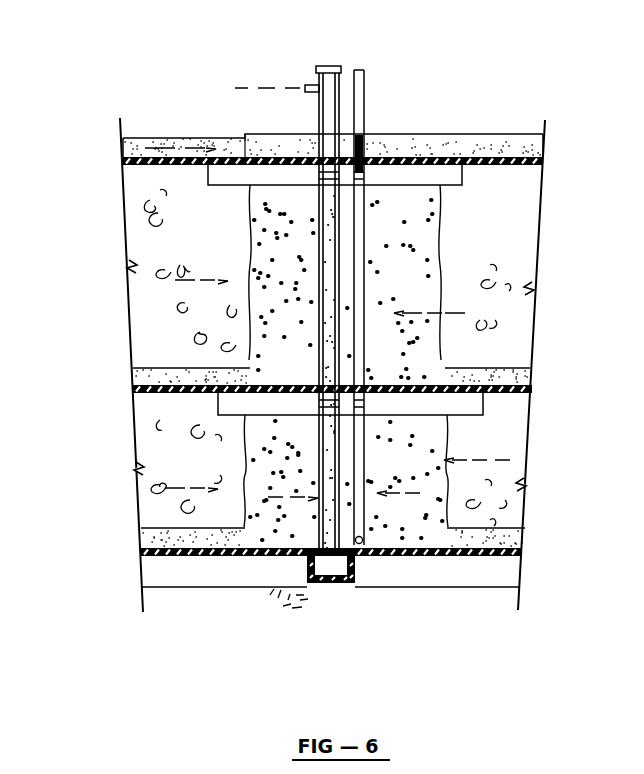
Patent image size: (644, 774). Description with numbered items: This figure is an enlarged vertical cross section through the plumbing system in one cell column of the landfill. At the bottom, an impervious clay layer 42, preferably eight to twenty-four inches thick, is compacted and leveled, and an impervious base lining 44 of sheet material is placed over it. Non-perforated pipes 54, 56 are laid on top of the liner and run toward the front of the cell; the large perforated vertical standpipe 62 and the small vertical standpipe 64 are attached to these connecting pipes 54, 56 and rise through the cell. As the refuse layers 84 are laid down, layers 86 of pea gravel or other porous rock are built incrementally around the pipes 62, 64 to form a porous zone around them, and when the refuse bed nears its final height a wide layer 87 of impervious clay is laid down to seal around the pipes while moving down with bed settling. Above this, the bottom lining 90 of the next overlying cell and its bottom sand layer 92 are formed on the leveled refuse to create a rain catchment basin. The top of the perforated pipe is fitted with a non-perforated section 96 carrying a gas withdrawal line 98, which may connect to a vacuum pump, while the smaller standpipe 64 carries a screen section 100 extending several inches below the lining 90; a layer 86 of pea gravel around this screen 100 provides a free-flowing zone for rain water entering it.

The impervious clay layer 42 is at (246, 577).
The impervious base lining 44 is at (205, 555).
The non-perforated pipe 54 is at (345, 583).
The non-perforated pipe 56 is at (375, 555).
The large perforated vertical standpipe 62 is at (320, 245).
The small vertical standpipe 64 is at (360, 283).
The refuse layers 84 is at (160, 478).
The pea gravel layer 86 is at (440, 135).
The impervious clay layer 87 is at (468, 403).
The bottom lining 90 is at (480, 163).
The bottom sand layer 92 is at (143, 378).
The non-perforated section 96 is at (330, 92).
The gas withdrawal line 98 is at (305, 85).
The screen section 100 is at (362, 140).